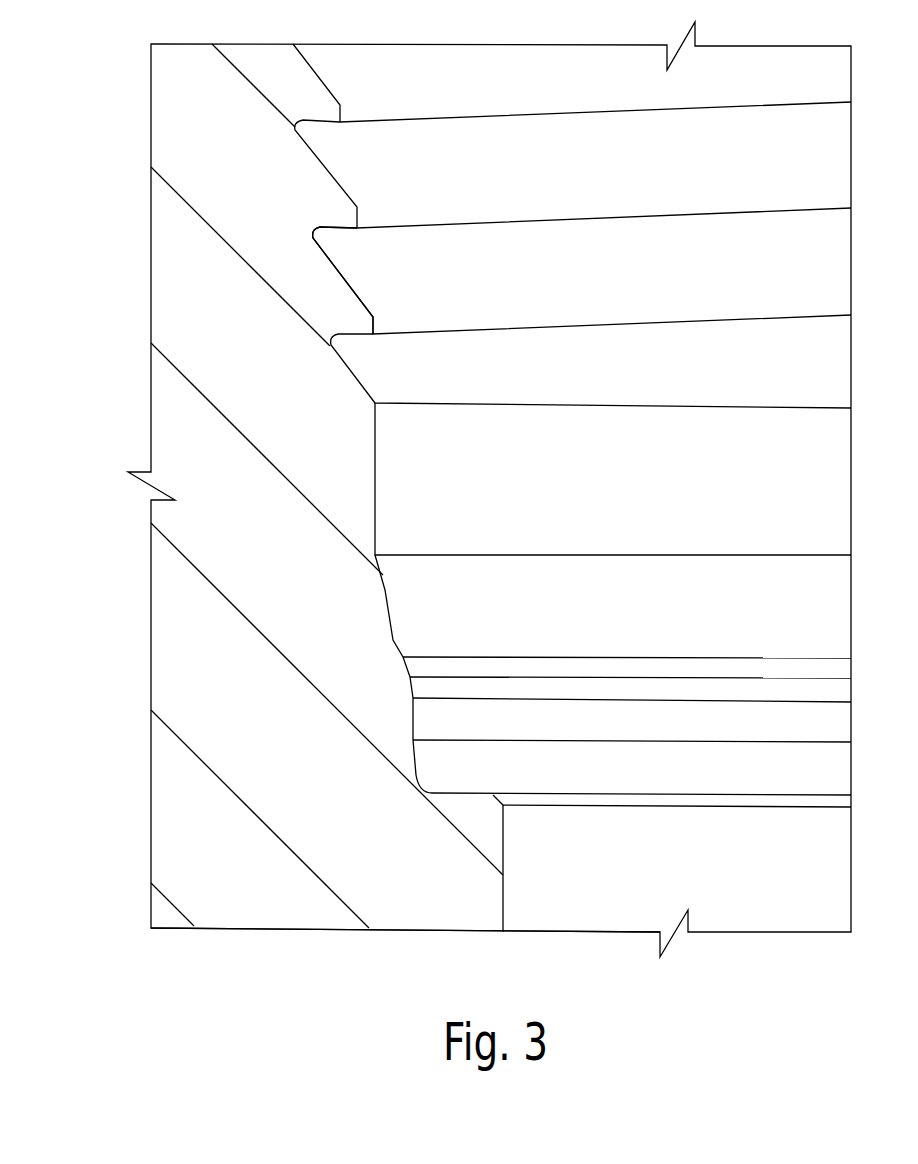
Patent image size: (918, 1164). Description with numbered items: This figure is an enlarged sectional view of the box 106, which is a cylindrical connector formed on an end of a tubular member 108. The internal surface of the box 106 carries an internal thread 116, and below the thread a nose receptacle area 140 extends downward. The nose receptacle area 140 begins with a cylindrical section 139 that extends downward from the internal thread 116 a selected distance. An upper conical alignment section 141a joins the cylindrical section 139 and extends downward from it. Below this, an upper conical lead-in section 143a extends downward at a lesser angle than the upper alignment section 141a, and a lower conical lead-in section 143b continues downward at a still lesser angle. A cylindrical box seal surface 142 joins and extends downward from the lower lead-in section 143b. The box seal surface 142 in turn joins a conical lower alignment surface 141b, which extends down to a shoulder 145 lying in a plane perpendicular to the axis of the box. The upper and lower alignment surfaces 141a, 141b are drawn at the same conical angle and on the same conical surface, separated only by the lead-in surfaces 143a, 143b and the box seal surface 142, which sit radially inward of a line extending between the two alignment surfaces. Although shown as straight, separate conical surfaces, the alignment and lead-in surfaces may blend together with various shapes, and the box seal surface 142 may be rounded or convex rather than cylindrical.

The box 106 is at (320, 972).
The tubular member 108 is at (148, 815).
The internal thread 116 is at (343, 277).
The cylindrical section 139 is at (375, 477).
The nose receptacle area 140 is at (400, 580).
The upper conical alignment section 141a is at (390, 620).
The lower alignment surface 141b is at (420, 765).
The box seal surface 142 is at (413, 722).
The upper conical lead-in section 143a is at (400, 658).
The lower conical lead-in section 143b is at (403, 673).
The shoulder 145 is at (477, 790).